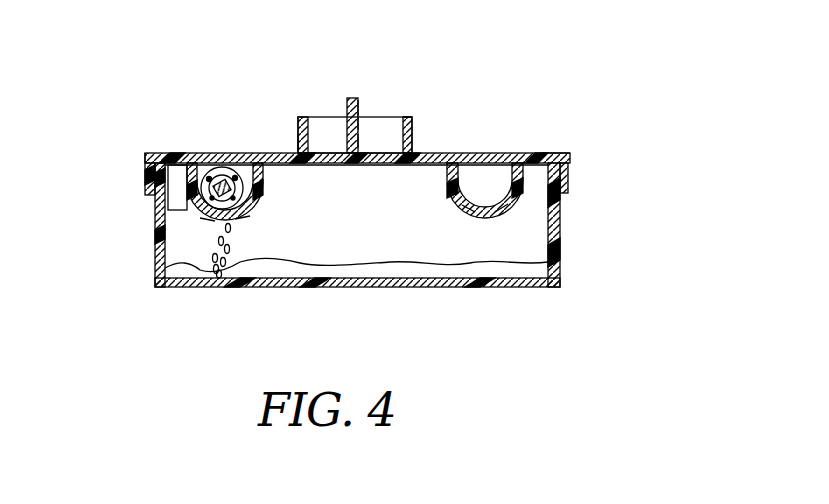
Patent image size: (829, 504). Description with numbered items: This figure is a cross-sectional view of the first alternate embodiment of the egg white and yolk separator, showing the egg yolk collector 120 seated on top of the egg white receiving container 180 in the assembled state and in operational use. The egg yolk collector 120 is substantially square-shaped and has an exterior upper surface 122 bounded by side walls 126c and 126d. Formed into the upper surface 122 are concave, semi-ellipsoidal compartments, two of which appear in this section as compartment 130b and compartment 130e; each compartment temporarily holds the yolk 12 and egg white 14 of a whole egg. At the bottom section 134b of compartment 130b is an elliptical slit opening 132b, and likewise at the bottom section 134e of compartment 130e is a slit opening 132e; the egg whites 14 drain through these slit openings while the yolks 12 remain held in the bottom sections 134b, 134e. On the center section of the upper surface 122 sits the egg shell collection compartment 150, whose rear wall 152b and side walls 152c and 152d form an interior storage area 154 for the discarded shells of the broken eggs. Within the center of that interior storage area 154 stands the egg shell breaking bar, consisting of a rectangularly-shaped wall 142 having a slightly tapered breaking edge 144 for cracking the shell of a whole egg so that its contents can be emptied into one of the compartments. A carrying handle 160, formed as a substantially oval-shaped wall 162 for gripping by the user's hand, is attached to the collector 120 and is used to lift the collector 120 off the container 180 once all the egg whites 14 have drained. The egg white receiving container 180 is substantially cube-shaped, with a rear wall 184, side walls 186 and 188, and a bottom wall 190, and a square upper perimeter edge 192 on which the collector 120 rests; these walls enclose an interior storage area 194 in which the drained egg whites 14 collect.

The egg yolk 12 is at (232, 178).
The egg white 14 is at (250, 184).
The egg yolk collector 120 is at (572, 150).
The upper surface 122 is at (556, 147).
The side wall 126c is at (154, 178).
The side wall 126d is at (570, 165).
The concave-shaped compartment 130b is at (198, 166).
The concave-shaped compartment 130e is at (478, 176).
The slit opening 132b is at (232, 228).
The slit opening 132e is at (486, 215).
The bottom section 134b is at (195, 226).
The bottom section 134e is at (462, 213).
The rectangularly-shaped wall 142 is at (362, 140).
The breaking edge 144 is at (362, 123).
The egg shell collection compartment 150 is at (420, 119).
The rear wall 152b is at (328, 132).
The side wall 152c is at (297, 138).
The side wall 152d is at (413, 136).
The interior storage area 154 is at (305, 128).
The carrying handle 160 is at (360, 96).
The oval-shaped wall 162 is at (360, 108).
The egg white receiving container 180 is at (152, 279).
The rear wall 184 is at (340, 213).
The side wall 186 is at (160, 249).
The side wall 188 is at (562, 226).
The bottom wall 190 is at (383, 283).
The upper perimeter edge 192 is at (160, 153).
The interior storage area 194 is at (325, 244).